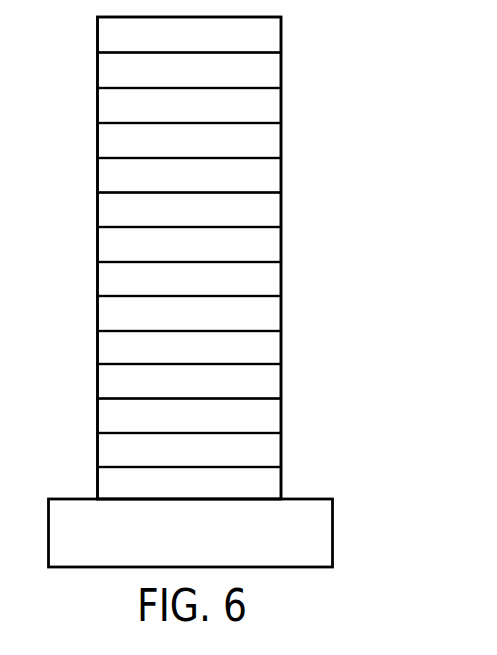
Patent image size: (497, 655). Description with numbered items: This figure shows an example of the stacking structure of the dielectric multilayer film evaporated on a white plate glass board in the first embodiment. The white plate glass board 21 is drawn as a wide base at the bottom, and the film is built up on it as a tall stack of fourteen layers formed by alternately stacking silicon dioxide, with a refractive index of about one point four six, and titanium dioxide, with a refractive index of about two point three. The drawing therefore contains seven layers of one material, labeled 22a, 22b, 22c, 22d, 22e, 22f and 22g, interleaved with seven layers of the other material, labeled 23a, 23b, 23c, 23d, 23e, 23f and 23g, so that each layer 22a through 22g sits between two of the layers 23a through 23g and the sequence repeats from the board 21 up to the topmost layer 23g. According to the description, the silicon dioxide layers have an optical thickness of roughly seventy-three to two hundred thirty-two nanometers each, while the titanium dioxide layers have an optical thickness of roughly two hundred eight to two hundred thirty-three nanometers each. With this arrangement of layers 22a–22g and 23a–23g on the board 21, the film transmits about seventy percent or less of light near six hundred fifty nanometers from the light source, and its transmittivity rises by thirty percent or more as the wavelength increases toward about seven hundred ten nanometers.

The substrate 21 is at (335, 533).
The first layer 22a is at (94, 485).
The first layer 22b is at (94, 418).
The first layer 22c is at (94, 350).
The first layer 22d is at (94, 281).
The first layer 22e is at (94, 212).
The first layer 22f is at (94, 142).
The first layer 22g is at (94, 72).
The second layer 23a is at (282, 450).
The second layer 23b is at (282, 381).
The second layer 23c is at (282, 314).
The second layer 23d is at (282, 244).
The second layer 23e is at (282, 175).
The second layer 23f is at (282, 106).
The second layer 23g is at (282, 35).